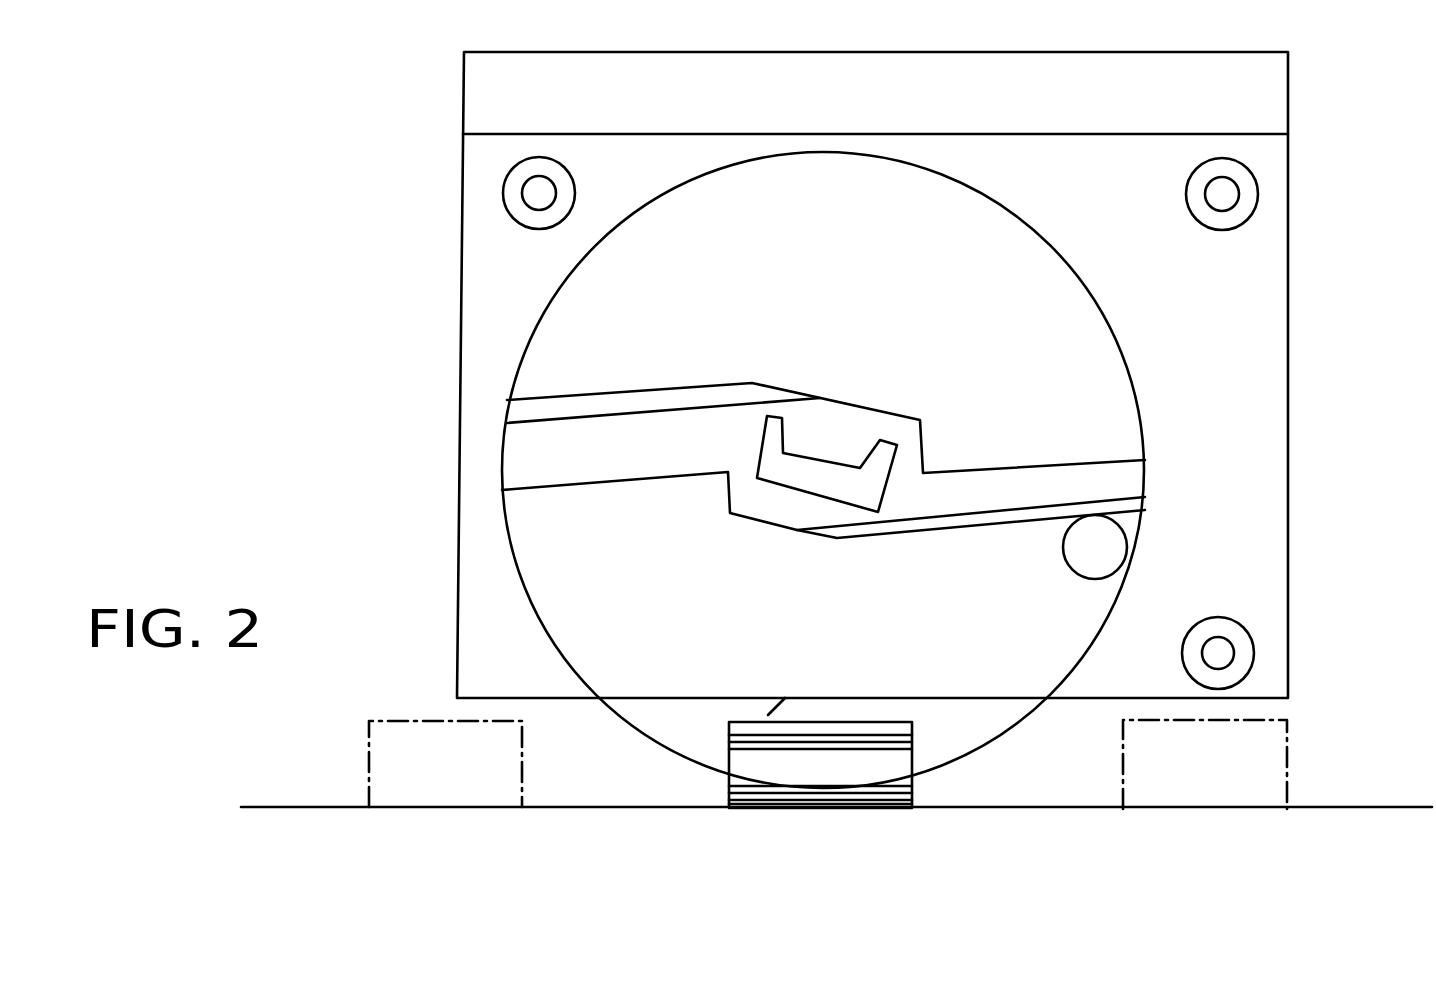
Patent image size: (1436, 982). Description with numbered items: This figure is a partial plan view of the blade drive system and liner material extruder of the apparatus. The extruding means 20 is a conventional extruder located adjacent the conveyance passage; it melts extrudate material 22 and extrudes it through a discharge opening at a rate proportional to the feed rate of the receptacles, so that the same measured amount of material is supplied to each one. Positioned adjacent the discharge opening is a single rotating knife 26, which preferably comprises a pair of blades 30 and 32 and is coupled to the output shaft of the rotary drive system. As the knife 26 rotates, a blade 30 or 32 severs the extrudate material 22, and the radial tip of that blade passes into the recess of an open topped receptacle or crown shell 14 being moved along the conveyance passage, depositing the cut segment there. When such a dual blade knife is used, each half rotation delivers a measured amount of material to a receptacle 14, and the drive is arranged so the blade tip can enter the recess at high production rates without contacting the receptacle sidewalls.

The receptacles or crown shells 14 is at (778, 787).
The extruding means 20 is at (1289, 190).
The extrudate material 22 is at (1102, 552).
The rotating knife 26 is at (828, 430).
The blade 30 is at (1093, 512).
The blade 32 is at (523, 405).